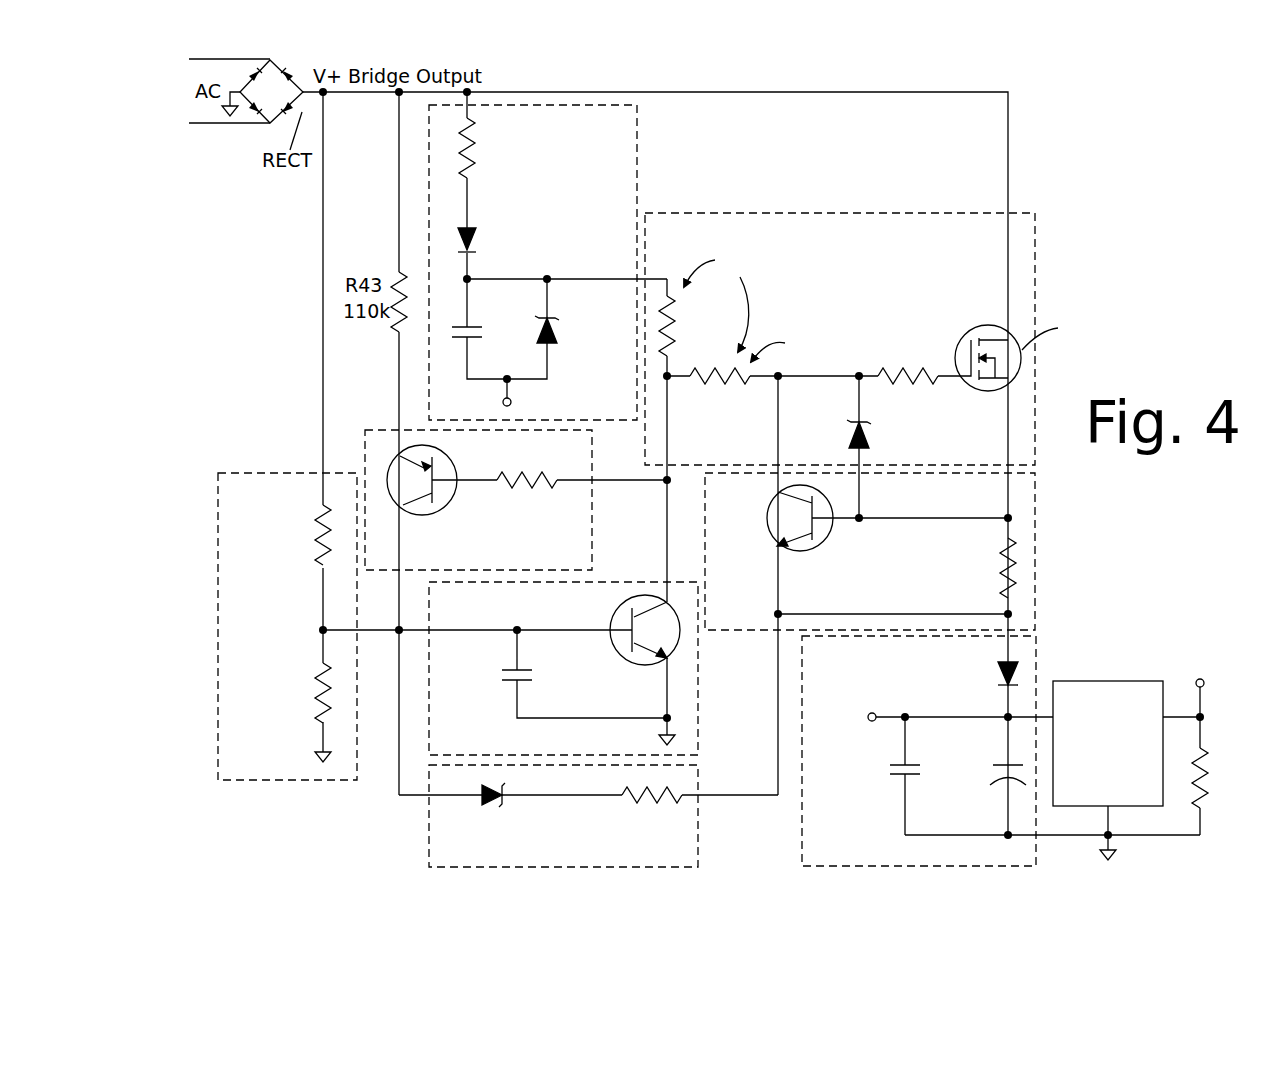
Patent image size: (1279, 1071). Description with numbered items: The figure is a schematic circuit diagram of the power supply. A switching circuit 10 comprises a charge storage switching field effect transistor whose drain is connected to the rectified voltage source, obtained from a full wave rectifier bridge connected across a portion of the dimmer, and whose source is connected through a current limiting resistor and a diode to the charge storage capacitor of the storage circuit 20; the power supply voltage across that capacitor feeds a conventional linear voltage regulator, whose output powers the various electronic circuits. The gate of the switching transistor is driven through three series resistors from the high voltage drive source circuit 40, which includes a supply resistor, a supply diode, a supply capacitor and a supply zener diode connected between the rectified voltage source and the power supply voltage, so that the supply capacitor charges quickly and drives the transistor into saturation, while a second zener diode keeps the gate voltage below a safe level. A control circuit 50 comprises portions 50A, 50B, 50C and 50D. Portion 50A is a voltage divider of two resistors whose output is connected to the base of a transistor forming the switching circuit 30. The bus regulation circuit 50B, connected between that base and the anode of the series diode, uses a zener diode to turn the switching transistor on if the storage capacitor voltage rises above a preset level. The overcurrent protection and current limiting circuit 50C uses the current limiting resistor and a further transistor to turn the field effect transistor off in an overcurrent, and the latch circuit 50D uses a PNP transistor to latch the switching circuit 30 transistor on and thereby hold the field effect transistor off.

The switching circuit 10 is at (915, 213).
The storage circuit 20 is at (802, 828).
The switching circuit 30 is at (698, 712).
The high voltage drive source circuit 40 is at (637, 150).
The control circuit 50 is at (1229, 776).
The control circuit portion 50A is at (262, 473).
The bus regulation circuit 50B is at (429, 825).
The overcurrent protection and current limiting circuit 50C is at (1035, 527).
The latch circuit 50D is at (595, 493).